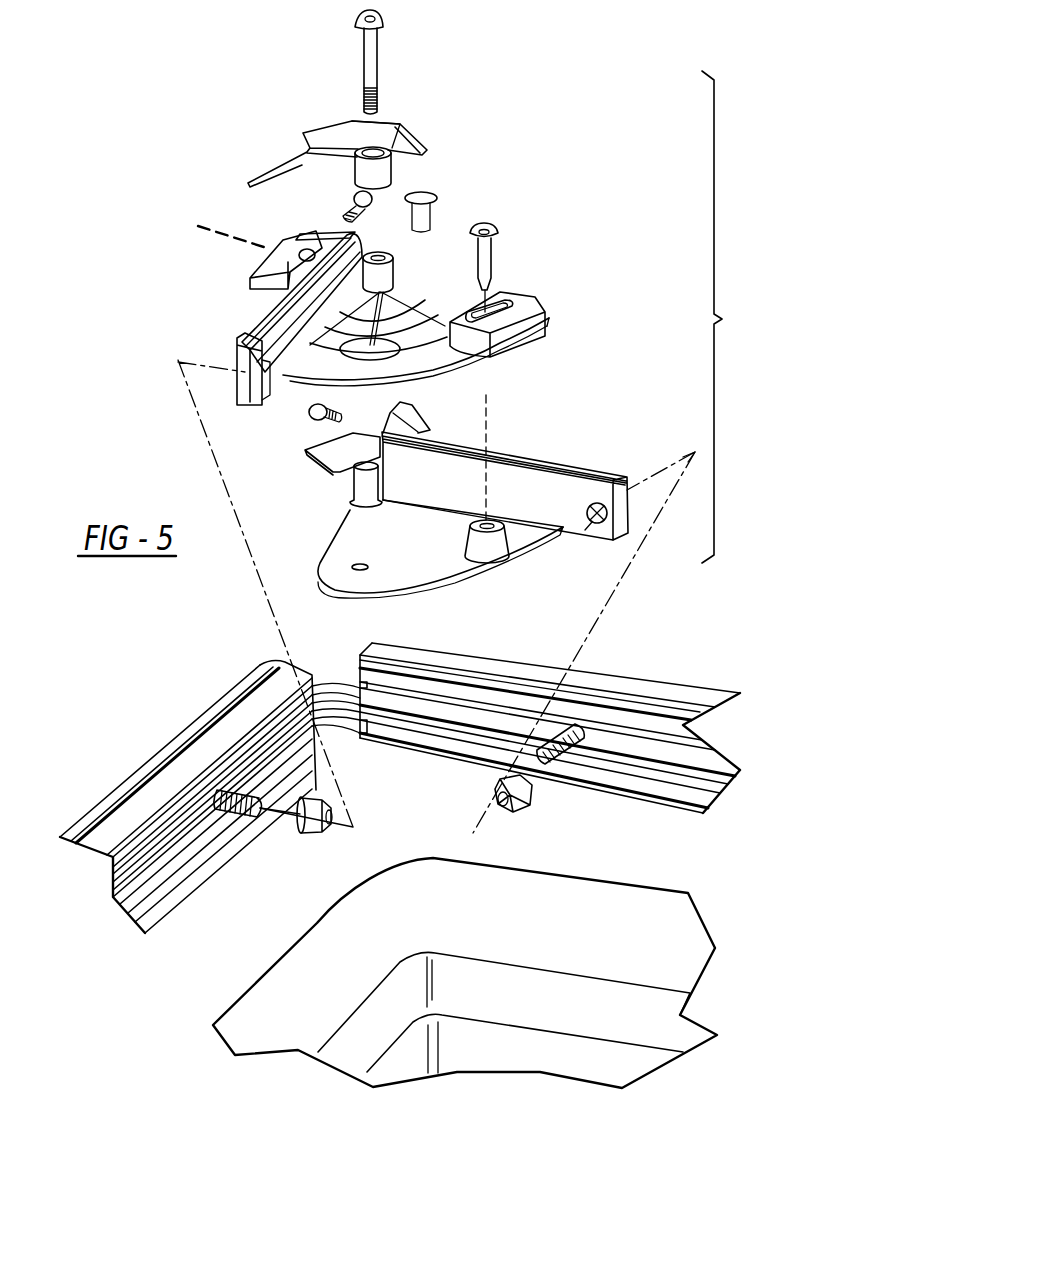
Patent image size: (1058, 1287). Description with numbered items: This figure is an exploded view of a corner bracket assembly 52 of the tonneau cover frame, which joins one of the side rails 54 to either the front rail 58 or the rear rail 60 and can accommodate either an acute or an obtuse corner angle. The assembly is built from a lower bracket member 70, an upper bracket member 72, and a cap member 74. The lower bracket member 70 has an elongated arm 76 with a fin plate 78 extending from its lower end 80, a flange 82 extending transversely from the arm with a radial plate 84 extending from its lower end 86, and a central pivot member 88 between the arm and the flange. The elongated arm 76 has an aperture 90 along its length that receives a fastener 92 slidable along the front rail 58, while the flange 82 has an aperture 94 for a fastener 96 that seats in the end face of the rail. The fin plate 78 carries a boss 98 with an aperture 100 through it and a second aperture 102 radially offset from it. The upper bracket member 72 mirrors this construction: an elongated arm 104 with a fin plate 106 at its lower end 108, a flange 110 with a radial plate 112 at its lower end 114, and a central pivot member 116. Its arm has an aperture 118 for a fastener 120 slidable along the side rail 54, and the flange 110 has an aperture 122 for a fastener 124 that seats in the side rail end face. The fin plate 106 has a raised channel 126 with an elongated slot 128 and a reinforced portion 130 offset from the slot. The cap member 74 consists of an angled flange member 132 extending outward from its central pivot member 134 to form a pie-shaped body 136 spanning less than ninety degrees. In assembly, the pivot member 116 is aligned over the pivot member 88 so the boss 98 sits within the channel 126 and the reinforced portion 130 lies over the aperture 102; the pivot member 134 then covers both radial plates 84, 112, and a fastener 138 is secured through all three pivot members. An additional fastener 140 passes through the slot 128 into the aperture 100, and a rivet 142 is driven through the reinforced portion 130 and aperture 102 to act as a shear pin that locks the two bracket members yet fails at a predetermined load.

The corner bracket assembly 52 is at (728, 317).
The side rail 54 is at (192, 758).
The front rail 58 is at (642, 697).
The rear rail 60 is at (530, 686).
The lower bracket member 70 is at (592, 430).
The upper bracket member 72 is at (597, 262).
The cap member 74 is at (470, 104).
The elongated arm 76 is at (533, 467).
The fin plate 78 is at (423, 567).
The lower end 80 is at (577, 530).
The flange 82 is at (428, 418).
The radial plate 84 is at (310, 449).
The lower end 86 is at (482, 433).
The central pivot member 88 is at (363, 487).
The aperture 90 is at (590, 523).
The fastener 92 is at (567, 750).
The aperture 94 is at (412, 408).
The fastener 96 is at (313, 422).
The boss 98 is at (500, 547).
The aperture 100 is at (470, 527).
The aperture 102 is at (363, 570).
The elongated arm 104 is at (290, 337).
The fin plate 106 is at (393, 297).
The lower end 108 is at (280, 398).
The flange 110 is at (357, 232).
The radial plate 112 is at (230, 226).
The lower end 114 is at (270, 280).
The central pivot member 116 is at (390, 260).
The aperture 118 is at (267, 350).
The fastener 120 is at (233, 813).
The aperture 122 is at (303, 253).
The fastener 124 is at (345, 203).
The raised channel 126 is at (530, 325).
The elongated slot 128 is at (508, 305).
The reinforced portion 130 is at (367, 352).
The flange member 132 is at (338, 133).
The central pivot member 134 is at (388, 167).
The pie-shaped body 136 is at (377, 133).
The fastener 138 is at (372, 58).
The fastener 140 is at (488, 253).
The rivet 142 is at (420, 218).